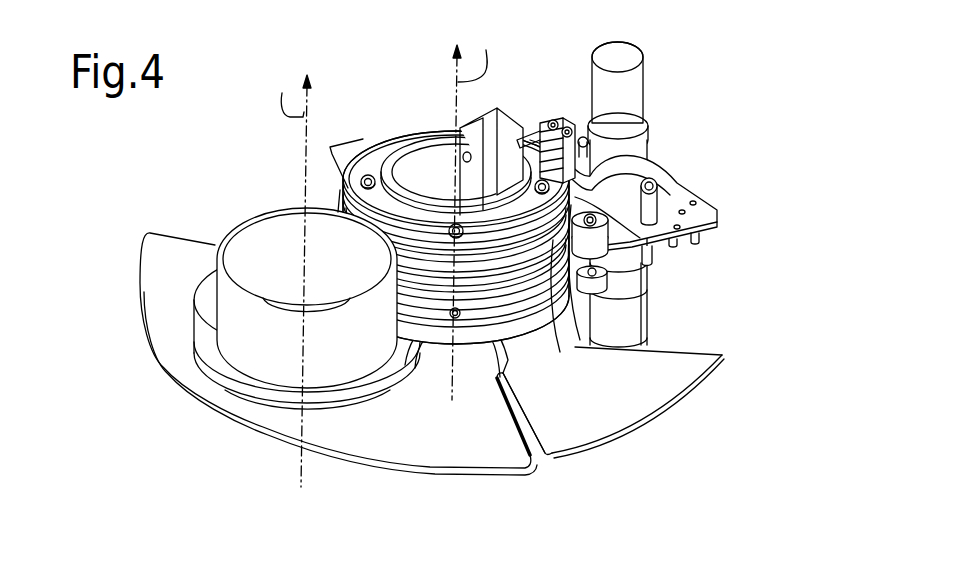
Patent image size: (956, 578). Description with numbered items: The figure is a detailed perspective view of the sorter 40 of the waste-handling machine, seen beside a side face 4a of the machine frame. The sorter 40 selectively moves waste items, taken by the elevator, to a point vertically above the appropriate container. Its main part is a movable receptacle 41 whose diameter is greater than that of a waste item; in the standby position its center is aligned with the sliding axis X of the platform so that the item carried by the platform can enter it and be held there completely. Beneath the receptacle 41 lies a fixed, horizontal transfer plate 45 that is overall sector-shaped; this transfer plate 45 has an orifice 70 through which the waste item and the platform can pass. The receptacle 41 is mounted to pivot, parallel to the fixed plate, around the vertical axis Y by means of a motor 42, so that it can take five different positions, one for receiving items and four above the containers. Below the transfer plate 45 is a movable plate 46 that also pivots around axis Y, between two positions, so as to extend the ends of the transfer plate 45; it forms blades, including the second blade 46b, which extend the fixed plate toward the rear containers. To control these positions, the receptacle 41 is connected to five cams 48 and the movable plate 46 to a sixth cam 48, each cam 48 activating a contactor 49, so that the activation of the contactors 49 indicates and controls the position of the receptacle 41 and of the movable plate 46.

The side face 4a is at (355, 147).
The sorter 40 is at (745, 337).
The movable receptacle 41 is at (265, 235).
The motor 42 is at (635, 82).
The transfer plate 45 is at (378, 448).
The movable plate 46 is at (652, 403).
The second blade 46b is at (567, 431).
The cam 48 is at (645, 150).
The contactor 49 is at (540, 124).
The orifice 70 is at (258, 407).